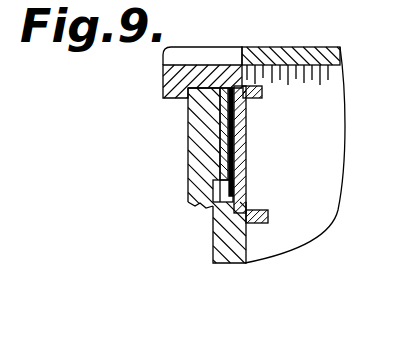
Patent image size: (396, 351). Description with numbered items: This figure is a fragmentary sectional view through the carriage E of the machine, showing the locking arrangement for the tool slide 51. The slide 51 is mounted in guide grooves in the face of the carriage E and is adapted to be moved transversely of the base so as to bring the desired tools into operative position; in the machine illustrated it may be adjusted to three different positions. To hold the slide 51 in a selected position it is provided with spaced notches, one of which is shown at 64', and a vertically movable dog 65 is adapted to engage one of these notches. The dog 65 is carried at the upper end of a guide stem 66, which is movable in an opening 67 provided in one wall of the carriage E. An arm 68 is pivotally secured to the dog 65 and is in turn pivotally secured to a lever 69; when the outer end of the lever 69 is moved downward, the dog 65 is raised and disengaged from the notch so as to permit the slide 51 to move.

The recess 64' is at (212, 49).
The dog 65 is at (163, 76).
The carriage E is at (334, 76).
The slide 51 is at (188, 126).
The opening 67 is at (222, 170).
The guide stem 66 is at (236, 132).
The arm 68 is at (248, 176).
The lever 69 is at (258, 223).